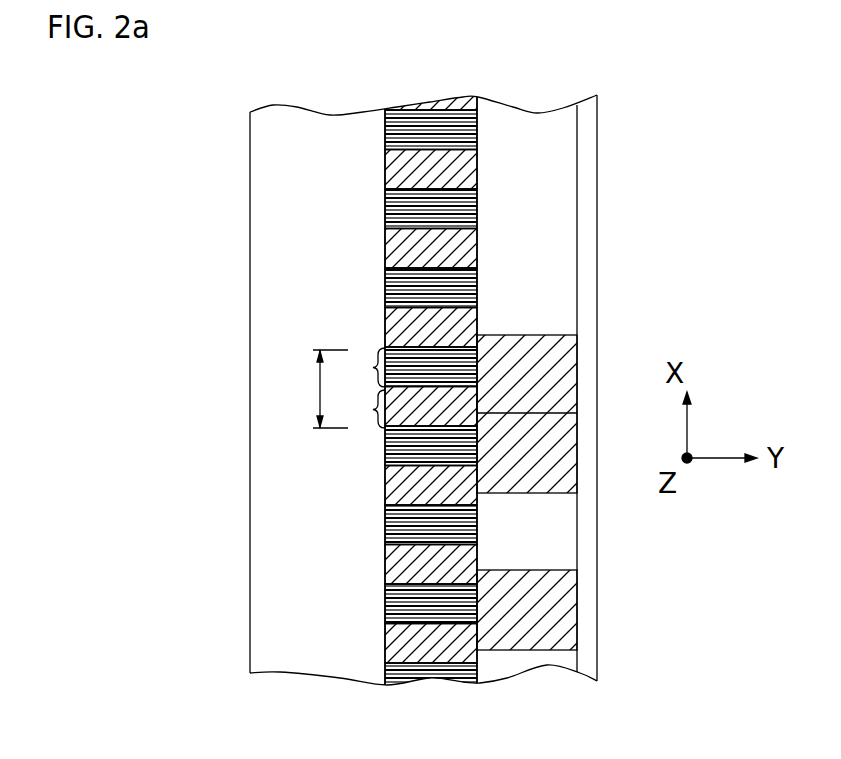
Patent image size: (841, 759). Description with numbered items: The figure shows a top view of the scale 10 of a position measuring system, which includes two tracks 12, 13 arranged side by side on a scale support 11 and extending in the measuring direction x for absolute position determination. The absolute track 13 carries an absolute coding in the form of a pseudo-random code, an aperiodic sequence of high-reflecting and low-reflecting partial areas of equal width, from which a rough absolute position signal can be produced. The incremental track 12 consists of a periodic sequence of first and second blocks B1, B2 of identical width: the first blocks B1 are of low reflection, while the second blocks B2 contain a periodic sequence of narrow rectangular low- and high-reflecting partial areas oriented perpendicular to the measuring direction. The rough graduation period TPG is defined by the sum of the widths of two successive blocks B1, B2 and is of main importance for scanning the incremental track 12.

The scale 10 is at (242, 448).
The scale support 11 is at (261, 331).
The incremental track 12 is at (431, 683).
The absolute track 13 is at (537, 672).
The first blocks B1 is at (360, 409).
The second blocks B2 is at (360, 368).
The graduation period TPG is at (306, 389).